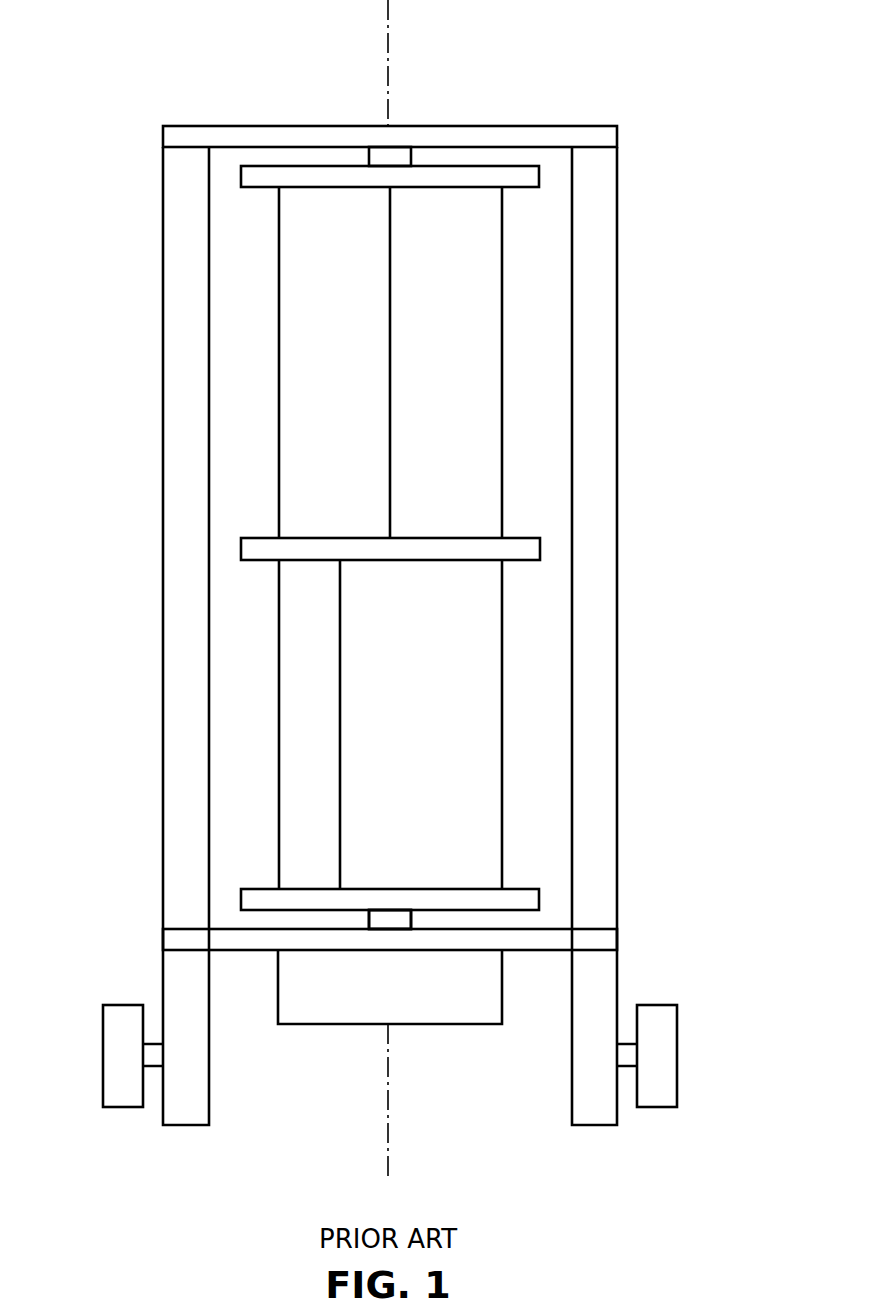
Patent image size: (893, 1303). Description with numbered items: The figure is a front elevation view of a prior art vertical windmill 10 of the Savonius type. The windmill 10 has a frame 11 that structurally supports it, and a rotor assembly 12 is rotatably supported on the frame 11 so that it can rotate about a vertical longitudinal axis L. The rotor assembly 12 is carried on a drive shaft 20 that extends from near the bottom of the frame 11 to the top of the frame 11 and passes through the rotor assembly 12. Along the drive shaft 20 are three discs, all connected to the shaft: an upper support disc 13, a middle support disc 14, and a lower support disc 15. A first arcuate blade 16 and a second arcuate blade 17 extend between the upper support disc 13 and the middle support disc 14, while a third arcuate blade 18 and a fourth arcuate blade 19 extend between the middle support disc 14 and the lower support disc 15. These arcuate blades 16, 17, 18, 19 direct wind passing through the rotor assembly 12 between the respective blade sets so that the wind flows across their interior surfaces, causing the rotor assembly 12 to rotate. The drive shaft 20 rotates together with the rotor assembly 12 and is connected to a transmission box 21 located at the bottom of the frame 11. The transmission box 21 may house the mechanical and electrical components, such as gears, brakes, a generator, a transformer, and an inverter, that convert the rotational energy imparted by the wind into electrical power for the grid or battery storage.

The vertical windmill 10 is at (168, 82).
The frame 11 is at (600, 390).
The rotor assembly 12 is at (248, 260).
The upper support disc 13 is at (308, 172).
The middle support disc 14 is at (527, 549).
The lower support disc 15 is at (528, 899).
The first arcuate blade 16 is at (469, 273).
The second arcuate blade 17 is at (310, 446).
The third arcuate blade 18 is at (457, 706).
The fourth arcuate blade 19 is at (298, 757).
The drive shaft 20 is at (382, 922).
The transmission box 21 is at (476, 1005).
The longitudinal axis L is at (388, 25).